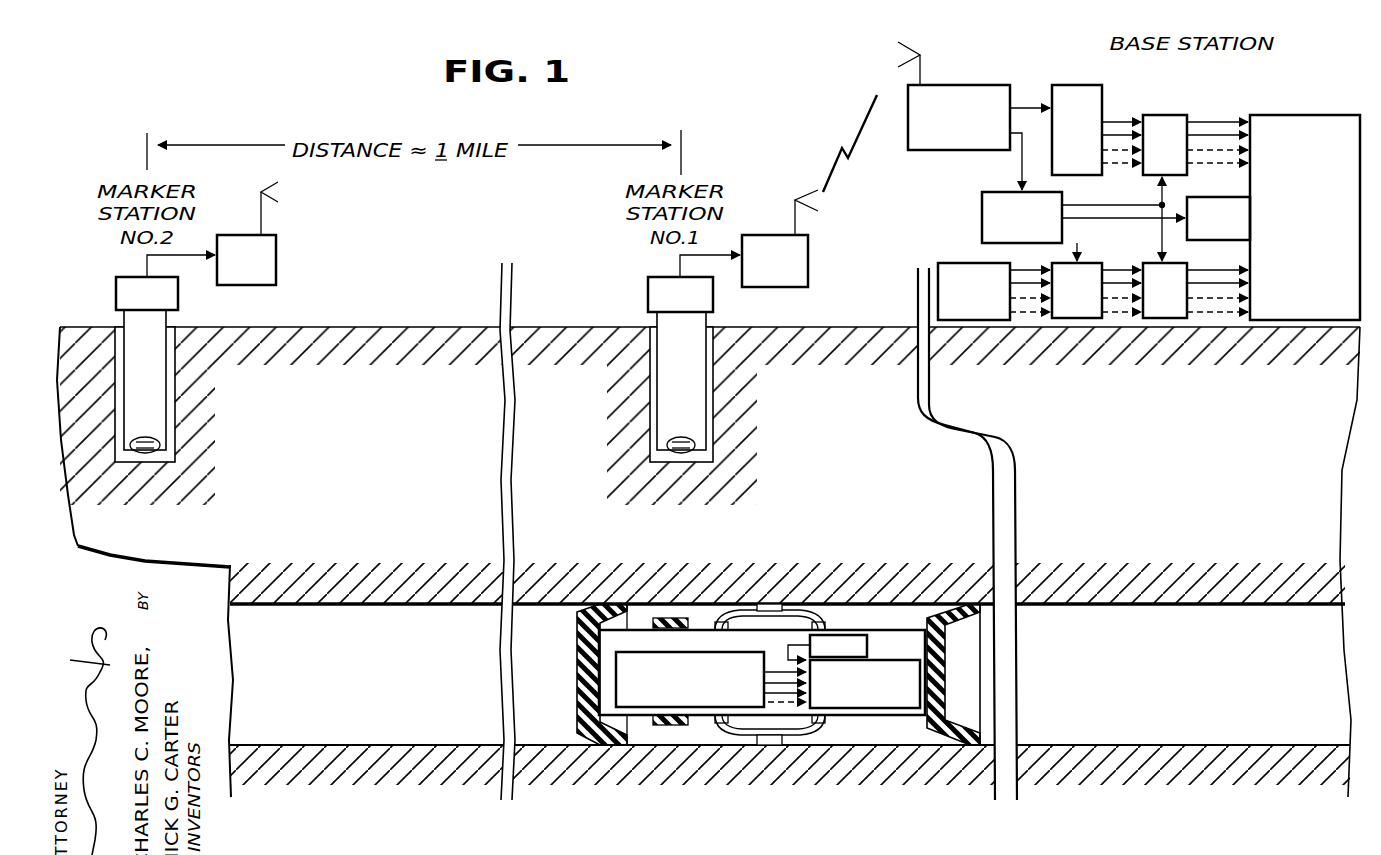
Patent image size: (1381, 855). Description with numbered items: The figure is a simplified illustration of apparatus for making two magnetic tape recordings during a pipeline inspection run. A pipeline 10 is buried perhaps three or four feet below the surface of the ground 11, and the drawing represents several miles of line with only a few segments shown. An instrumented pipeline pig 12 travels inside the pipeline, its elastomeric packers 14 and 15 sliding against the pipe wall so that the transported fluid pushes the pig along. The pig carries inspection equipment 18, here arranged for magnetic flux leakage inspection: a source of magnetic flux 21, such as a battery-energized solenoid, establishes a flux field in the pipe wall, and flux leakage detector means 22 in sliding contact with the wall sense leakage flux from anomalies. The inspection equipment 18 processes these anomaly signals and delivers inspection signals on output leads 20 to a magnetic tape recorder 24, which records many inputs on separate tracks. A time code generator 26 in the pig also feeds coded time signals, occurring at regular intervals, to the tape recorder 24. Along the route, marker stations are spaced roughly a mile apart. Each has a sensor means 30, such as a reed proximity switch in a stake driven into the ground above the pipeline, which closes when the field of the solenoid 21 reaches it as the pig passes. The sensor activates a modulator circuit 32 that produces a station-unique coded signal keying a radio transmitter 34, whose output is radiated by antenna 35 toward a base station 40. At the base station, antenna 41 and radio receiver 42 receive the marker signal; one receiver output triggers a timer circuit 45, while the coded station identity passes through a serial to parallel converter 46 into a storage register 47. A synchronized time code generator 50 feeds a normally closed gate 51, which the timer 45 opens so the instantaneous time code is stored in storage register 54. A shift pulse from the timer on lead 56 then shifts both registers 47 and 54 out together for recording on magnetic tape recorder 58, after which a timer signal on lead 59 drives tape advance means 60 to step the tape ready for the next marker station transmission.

The pipeline 10 is at (1148, 606).
The surface of the ground 11 is at (381, 327).
The instrumented pipeline pig 12 is at (795, 676).
The elastomeric packer 14 is at (580, 645).
The elastomeric packer 15 is at (945, 673).
The inspection equipment 18 is at (705, 708).
The output leads 20 is at (791, 703).
The source of magnetic flux 21 is at (666, 618).
The flux leakage detector means 22 is at (773, 604).
The magnetic tape recorder 24 is at (893, 709).
The time code generator 26 is at (867, 646).
The sensor means 30 is at (148, 462).
The modulator circuit 32 is at (178, 300).
The radio transmitter 34 is at (276, 250).
The antenna 35 is at (279, 203).
The base station 40 is at (1105, 222).
The antenna 41 is at (900, 55).
The radio receiver 42 is at (978, 85).
The timer circuit 45 is at (982, 196).
The serial to parallel converter 46 is at (1073, 85).
The storage register 47 is at (1186, 116).
The synchronized time code generator 50 is at (952, 263).
The normally closed gate 51 is at (1082, 320).
The storage register 54 is at (1168, 320).
The lead 56 is at (1098, 205).
The magnetic tape recorder 58 is at (1313, 115).
The lead 59 is at (1100, 218).
The tape advance means 60 is at (1205, 240).